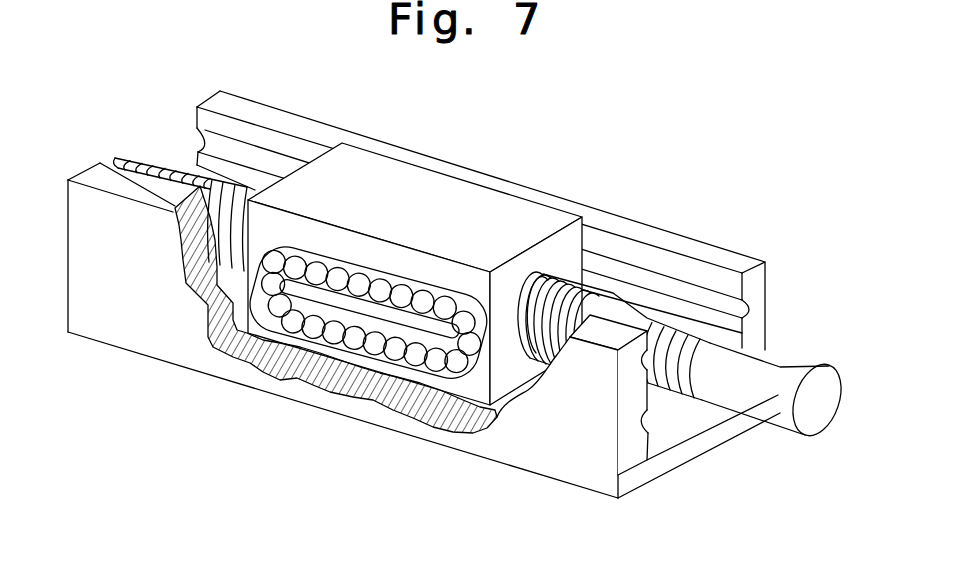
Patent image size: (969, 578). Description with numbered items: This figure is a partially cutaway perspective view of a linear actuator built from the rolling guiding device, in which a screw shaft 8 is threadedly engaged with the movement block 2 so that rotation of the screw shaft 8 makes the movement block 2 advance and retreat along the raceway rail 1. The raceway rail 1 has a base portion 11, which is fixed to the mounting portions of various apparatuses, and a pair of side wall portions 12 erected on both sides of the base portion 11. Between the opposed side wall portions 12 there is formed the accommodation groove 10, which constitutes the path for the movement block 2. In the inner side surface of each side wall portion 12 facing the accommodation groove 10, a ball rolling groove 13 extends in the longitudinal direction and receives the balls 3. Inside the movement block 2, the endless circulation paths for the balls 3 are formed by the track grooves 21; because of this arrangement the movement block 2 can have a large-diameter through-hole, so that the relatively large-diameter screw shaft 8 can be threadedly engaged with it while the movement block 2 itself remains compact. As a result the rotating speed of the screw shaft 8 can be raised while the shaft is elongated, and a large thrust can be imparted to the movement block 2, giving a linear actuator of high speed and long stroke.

The raceway rail 1 is at (698, 230).
The movement block 2 is at (438, 183).
The balls 3 is at (348, 336).
The screw shaft 8 is at (775, 378).
The accommodation groove 10 is at (668, 425).
The base portion 11 is at (657, 467).
The side wall portions 12 is at (748, 283).
The ball rolling groove 13 is at (617, 270).
The track grooves 21 is at (268, 335).